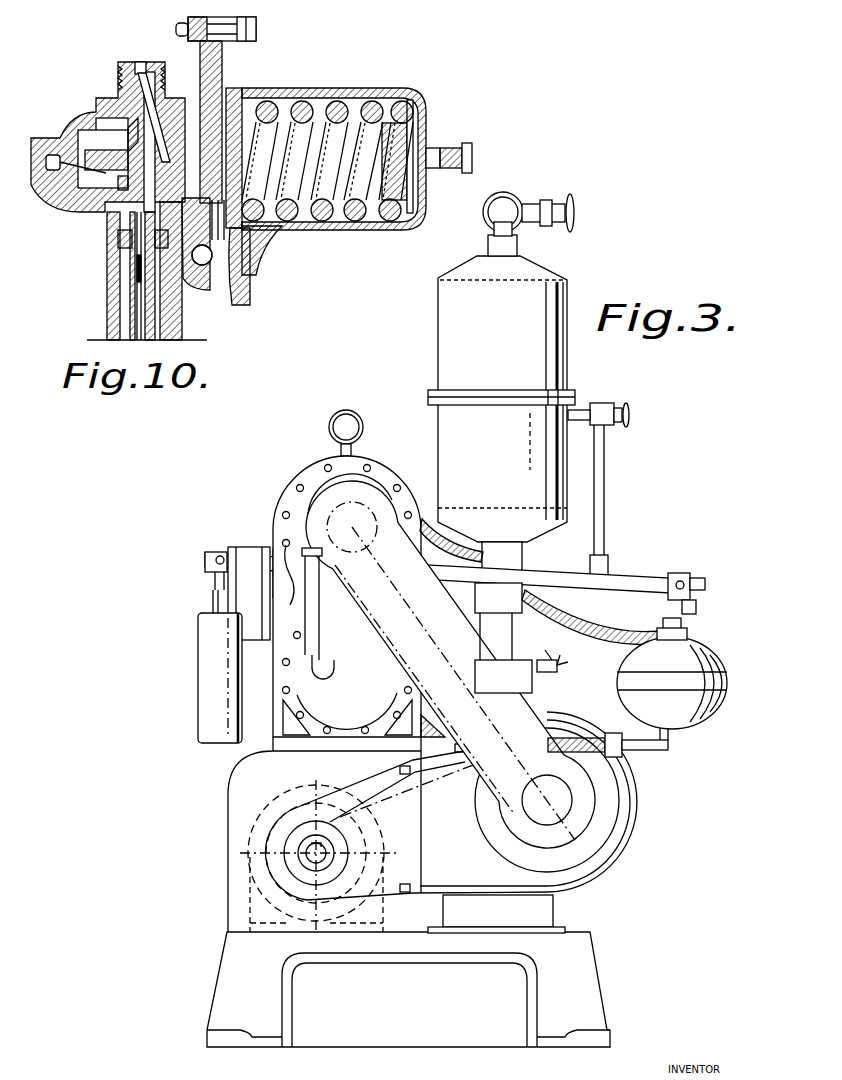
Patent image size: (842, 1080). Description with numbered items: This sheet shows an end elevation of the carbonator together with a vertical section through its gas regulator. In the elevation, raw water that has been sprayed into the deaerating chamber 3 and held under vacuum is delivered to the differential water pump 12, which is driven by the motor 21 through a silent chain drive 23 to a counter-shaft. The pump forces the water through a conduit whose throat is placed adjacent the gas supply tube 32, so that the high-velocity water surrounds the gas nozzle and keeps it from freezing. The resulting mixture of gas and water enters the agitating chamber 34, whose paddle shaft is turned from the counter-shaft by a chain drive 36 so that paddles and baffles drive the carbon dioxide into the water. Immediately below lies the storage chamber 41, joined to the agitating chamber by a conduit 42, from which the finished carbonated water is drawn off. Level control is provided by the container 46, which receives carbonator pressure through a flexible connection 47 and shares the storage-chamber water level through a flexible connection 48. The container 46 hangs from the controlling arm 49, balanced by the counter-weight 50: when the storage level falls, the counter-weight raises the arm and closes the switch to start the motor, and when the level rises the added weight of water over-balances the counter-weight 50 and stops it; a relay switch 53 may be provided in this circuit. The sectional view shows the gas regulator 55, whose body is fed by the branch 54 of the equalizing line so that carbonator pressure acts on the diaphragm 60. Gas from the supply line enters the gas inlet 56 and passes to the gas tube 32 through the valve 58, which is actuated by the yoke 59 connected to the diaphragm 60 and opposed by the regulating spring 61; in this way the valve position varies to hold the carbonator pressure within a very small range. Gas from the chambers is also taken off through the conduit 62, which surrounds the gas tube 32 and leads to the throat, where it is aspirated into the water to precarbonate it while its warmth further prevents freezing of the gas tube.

In FIG. 3, the deaerating chamber 3 is at (501, 383).
In FIG. 3, the water pump 12 is at (513, 636).
In FIG. 3, the motor 21 is at (300, 852).
In FIG. 3, the silent chain drive 23 is at (470, 866).
In FIG. 10, the gas supply tube 32 is at (138, 265).
In FIG. 3, the agitating chamber 34 is at (372, 488).
In FIG. 3, the chain drive 36 is at (490, 660).
In FIG. 3, the storage chamber 41 is at (359, 603).
In FIG. 3, the conduit 42 is at (322, 642).
In FIG. 3, the container 46 is at (700, 660).
In FIG. 3, the flexible connection 47 is at (622, 634).
In FIG. 3, the flexible connection 48 is at (615, 728).
In FIG. 3, the controlling arm 49 is at (246, 560).
In FIG. 3, the counter-weight 50 is at (200, 675).
In FIG. 3, the relay switch 53 is at (245, 596).
In FIG. 10, the branch 54 is at (202, 267).
In FIG. 10, the gas regulator 55 is at (200, 70).
In FIG. 10, the gas inlet 56 is at (118, 72).
In FIG. 10, the valve 58 is at (114, 208).
In FIG. 10, the yoke 59 is at (88, 196).
In FIG. 10, the diaphragm 60 is at (243, 70).
In FIG. 10, the regulating spring 61 is at (322, 221).
In FIG. 10, the conduit 62 is at (108, 304).